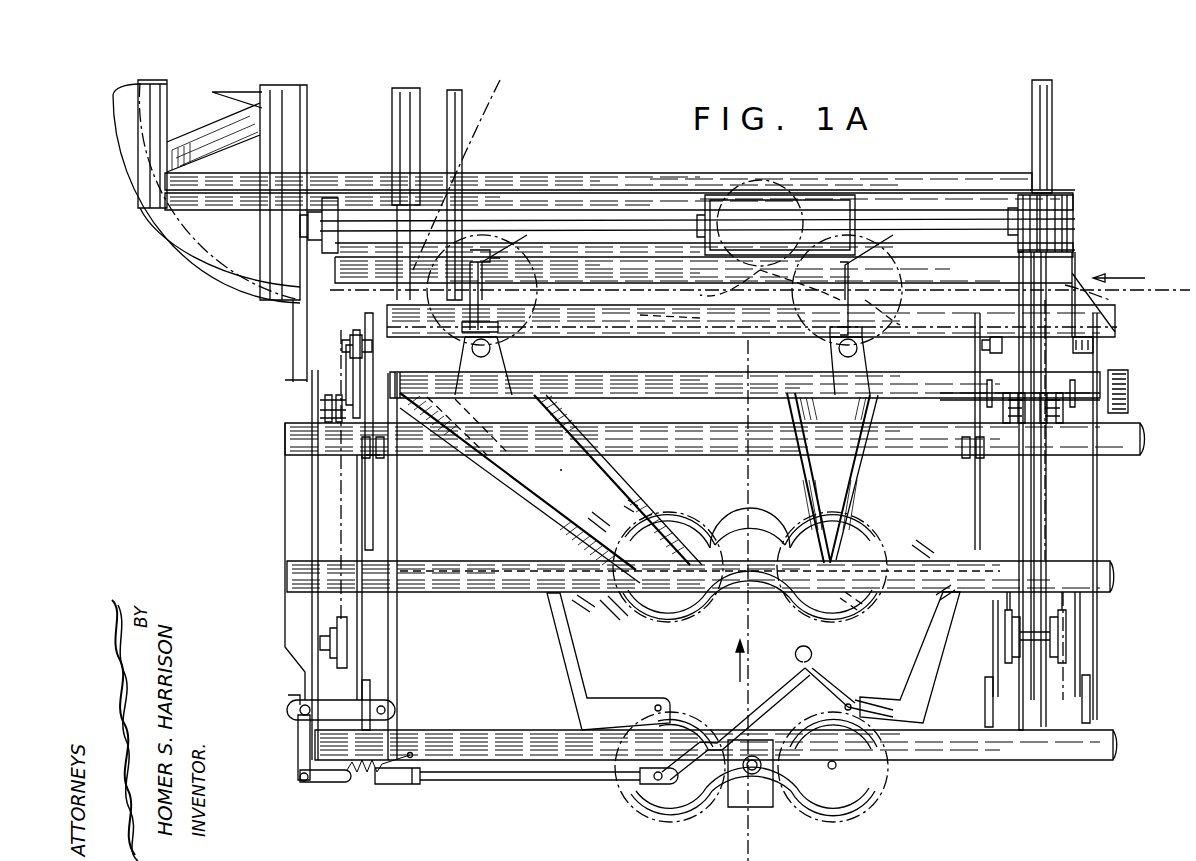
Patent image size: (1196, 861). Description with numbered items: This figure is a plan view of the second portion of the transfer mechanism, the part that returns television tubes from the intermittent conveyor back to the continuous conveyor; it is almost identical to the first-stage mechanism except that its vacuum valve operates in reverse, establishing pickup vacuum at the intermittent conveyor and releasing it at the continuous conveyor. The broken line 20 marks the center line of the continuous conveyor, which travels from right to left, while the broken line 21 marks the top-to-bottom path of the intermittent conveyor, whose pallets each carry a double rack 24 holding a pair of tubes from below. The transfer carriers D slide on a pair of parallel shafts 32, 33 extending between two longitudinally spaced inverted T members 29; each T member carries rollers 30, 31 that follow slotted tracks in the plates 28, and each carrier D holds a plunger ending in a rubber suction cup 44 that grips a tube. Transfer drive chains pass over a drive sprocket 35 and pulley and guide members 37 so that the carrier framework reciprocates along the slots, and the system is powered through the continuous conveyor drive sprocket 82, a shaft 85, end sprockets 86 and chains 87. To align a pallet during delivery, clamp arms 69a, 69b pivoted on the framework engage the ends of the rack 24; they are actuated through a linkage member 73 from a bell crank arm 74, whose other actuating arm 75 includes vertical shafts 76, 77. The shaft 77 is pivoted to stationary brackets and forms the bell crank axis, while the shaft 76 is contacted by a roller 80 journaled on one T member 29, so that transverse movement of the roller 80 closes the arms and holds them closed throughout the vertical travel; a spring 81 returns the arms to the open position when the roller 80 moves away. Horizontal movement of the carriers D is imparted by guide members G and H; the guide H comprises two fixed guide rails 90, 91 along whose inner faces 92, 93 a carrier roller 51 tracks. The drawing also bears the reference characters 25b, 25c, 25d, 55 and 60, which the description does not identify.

The center line of the continuous conveyor 20 is at (262, 264).
The path of the intermittent conveyor 21 is at (1088, 228).
The double rack 24 is at (862, 530).
The roll shaft 25b is at (866, 600).
The roll shaft 25c is at (905, 230).
The roll shaft 25d is at (505, 240).
The plates 28 is at (312, 390).
The inverted T members 29 is at (373, 367).
The roller 30 is at (350, 348).
The roller 31 is at (1000, 388).
The shaft 32 is at (490, 396).
The shaft 33 is at (568, 328).
The drive sprocket 35 is at (345, 432).
The pulley and guide member 37 is at (347, 656).
The rubber suction cup 44 is at (683, 291).
The carrier roller 51 is at (472, 348).
The cross beam 55 is at (617, 388).
The frame beam 60 is at (467, 578).
The clamp arm 69a is at (590, 692).
The clamp arm 69b is at (922, 700).
The linkage member 73 is at (570, 781).
The bell crank arm 74 is at (300, 750).
The actuating arm 75 is at (335, 708).
The vertical shaft 76 is at (386, 712).
The vertical shaft 77 is at (300, 712).
The roller 80 is at (368, 460).
The spring 81 is at (378, 777).
The continuous conveyor drive sprocket 82 is at (782, 186).
The shaft 85 is at (635, 223).
The end sprockets 86 is at (336, 250).
The chains 87 is at (1019, 322).
The fixed guide rail 90 is at (627, 500).
The fixed guide rail 91 is at (531, 500).
The inner face 92 is at (625, 503).
The inner face 93 is at (590, 530).
The transfer carriers D is at (497, 370).
The guide member G is at (832, 478).
The guide member H is at (564, 475).